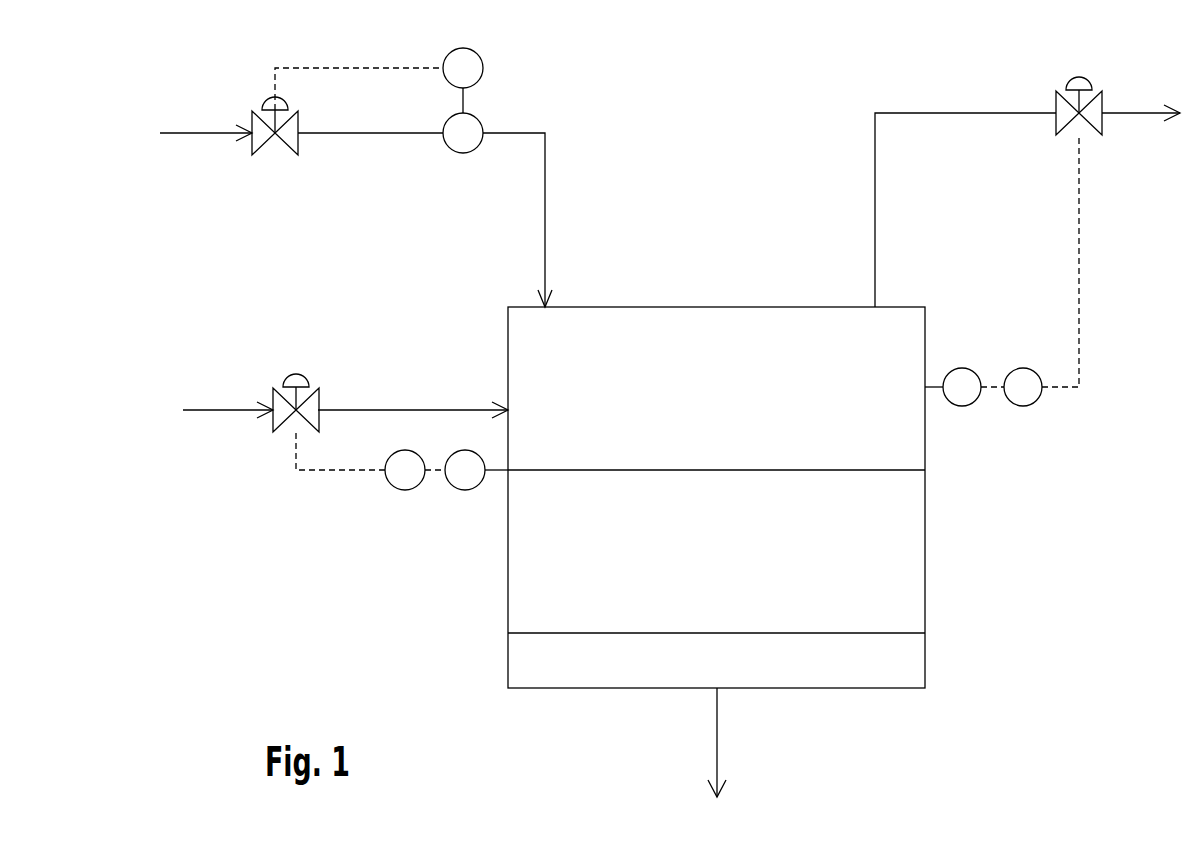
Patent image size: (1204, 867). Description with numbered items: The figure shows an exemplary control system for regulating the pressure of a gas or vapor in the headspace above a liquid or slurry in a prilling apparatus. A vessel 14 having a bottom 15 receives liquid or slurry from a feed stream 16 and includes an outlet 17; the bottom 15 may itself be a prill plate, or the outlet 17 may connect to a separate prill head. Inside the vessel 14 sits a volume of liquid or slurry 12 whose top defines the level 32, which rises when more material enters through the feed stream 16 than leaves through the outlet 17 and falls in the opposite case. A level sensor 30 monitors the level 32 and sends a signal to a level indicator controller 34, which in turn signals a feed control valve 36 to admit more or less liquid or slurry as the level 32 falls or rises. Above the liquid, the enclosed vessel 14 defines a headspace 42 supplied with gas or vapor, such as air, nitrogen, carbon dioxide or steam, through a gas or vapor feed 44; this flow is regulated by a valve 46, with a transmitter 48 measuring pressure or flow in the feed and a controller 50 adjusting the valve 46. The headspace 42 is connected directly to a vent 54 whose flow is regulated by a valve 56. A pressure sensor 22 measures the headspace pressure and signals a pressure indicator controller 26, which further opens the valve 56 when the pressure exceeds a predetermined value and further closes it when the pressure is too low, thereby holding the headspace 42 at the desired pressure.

The volume of liquid or slurry 12 is at (735, 593).
The vessel 14 is at (715, 307).
The bottom 15 is at (735, 677).
The feed stream 16 is at (227, 410).
The outlet 17 is at (716, 753).
The pressure sensor 22 is at (968, 368).
The pressure indicator controller 26 is at (1020, 368).
The level sensor 30 is at (465, 490).
The level 32 is at (875, 470).
The level indicator controller 34 is at (405, 490).
The feed control valve 36 is at (320, 397).
The headspace 42 is at (733, 428).
The gas or vapor feed 44 is at (200, 133).
The valve 46 is at (298, 143).
The transmitter 48 is at (480, 118).
The controller 50 is at (480, 58).
The vent 54 is at (1142, 113).
The valve 56 is at (1053, 100).